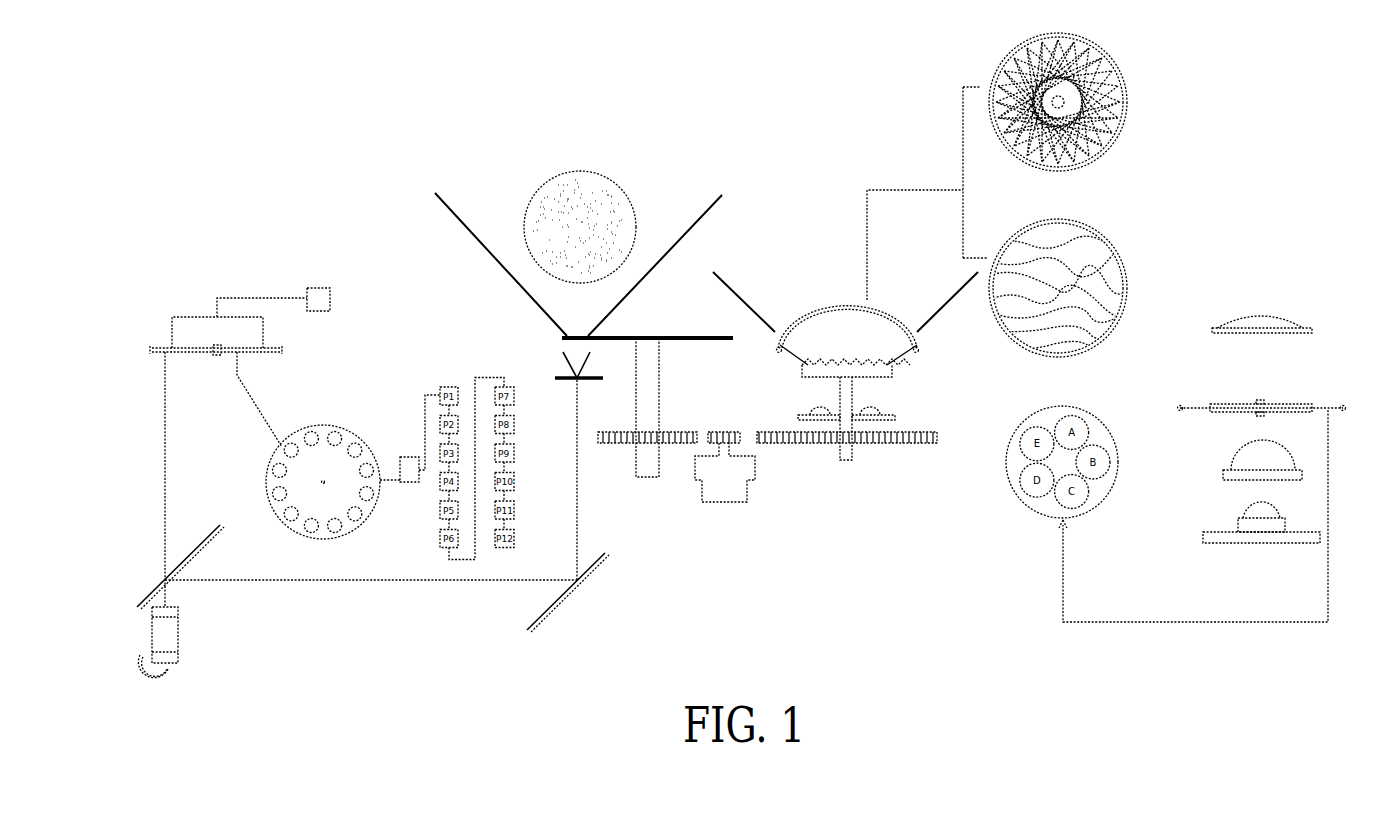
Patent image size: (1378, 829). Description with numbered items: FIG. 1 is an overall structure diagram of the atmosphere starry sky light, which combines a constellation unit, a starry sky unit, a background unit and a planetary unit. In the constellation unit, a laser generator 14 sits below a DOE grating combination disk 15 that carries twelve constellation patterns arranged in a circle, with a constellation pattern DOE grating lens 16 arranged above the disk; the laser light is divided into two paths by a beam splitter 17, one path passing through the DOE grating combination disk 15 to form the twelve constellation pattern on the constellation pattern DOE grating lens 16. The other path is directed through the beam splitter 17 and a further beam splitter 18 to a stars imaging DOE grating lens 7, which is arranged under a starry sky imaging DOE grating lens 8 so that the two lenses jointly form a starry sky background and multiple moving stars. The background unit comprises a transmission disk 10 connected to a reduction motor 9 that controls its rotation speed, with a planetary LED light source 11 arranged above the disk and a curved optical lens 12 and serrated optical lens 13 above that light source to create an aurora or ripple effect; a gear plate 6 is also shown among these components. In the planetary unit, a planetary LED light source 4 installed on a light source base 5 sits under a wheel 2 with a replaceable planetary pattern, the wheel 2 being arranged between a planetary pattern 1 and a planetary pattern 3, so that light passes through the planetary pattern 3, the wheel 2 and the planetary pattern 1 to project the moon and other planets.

The planetary pattern 1 is at (1210, 327).
The wheel 2 is at (1177, 408).
The planetary pattern 3 is at (1222, 472).
The planetary LED light source 4 is at (1237, 518).
The light source base 5 is at (1201, 535).
The gear plate 6 is at (618, 432).
The stars imaging DOE grating lens 7 is at (556, 372).
The starry sky imaging DOE grating lens 8 is at (535, 197).
The reduction motor 9 is at (728, 432).
The transmission disk 10 is at (868, 433).
The planetary LED light source 11 is at (883, 415).
The curved optical lens 12 is at (897, 371).
The serrated optical lens 13 is at (1003, 195).
The laser generator 14 is at (180, 635).
The DOE grating combination disk 15 is at (409, 469).
The constellation pattern DOE grating lens 16 is at (330, 298).
The beam splitter 17 is at (143, 597).
The beam splitter 18 is at (598, 565).